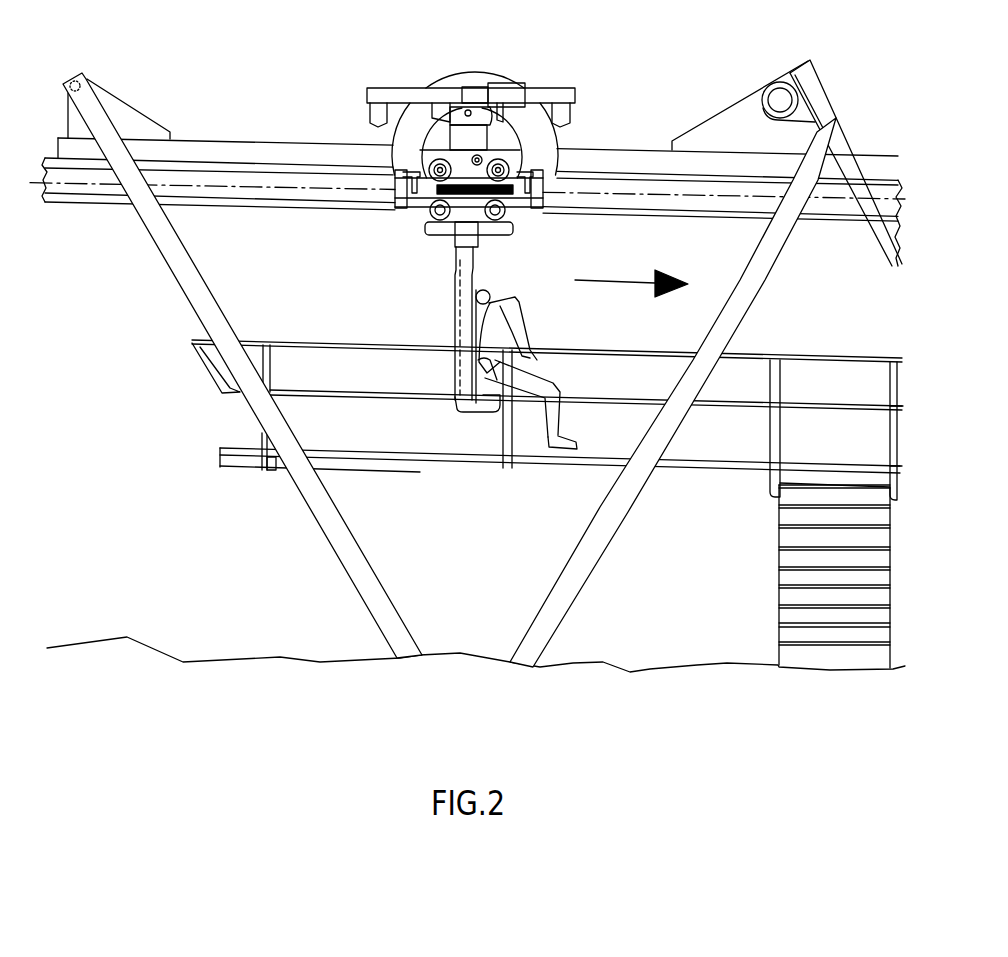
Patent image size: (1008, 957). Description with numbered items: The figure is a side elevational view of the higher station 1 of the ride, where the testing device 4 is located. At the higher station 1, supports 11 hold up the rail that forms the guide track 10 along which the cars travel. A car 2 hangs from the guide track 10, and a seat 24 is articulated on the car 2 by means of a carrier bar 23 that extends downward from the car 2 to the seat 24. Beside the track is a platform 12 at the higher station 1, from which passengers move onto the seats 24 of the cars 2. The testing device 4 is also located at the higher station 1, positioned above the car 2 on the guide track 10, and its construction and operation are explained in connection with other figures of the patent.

The installation / ride system 1 is at (130, 502).
The trolley / carriage 2 is at (476, 145).
The drive unit 4 is at (532, 86).
The rail / track beam 10 is at (605, 188).
The support struts 11 is at (196, 308).
The platform / walkway 12 is at (695, 472).
The support pole / hanger 23 is at (463, 318).
The seat 24 is at (493, 405).